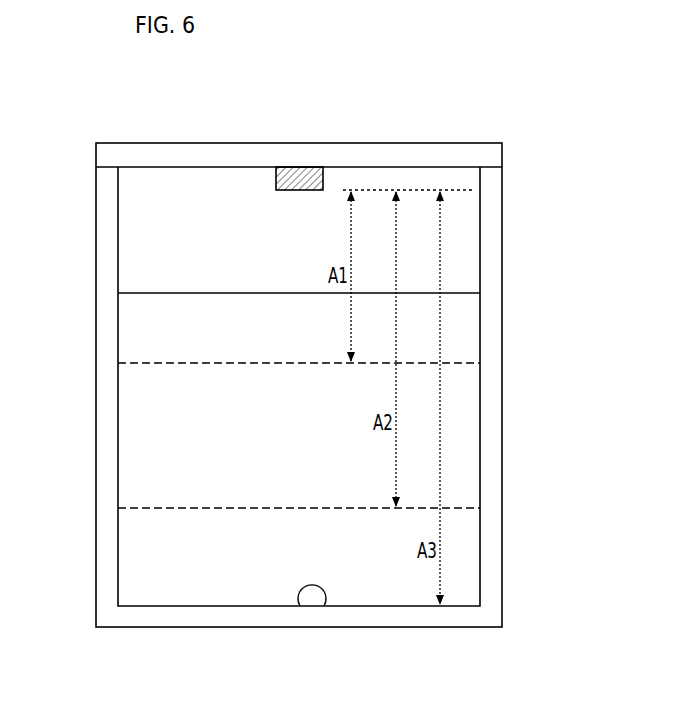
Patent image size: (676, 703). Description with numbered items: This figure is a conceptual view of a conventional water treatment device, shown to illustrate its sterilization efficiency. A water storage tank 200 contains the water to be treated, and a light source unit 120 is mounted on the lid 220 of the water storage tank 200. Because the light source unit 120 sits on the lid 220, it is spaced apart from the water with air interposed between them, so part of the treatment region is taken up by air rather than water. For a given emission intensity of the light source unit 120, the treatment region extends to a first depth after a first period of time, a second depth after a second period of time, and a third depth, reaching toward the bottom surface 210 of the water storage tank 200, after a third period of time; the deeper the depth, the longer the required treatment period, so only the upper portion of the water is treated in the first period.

The light source unit 120 is at (296, 166).
The lid 220 is at (407, 155).
The water storage tank 200 is at (493, 398).
The bottom surface 210 is at (322, 587).